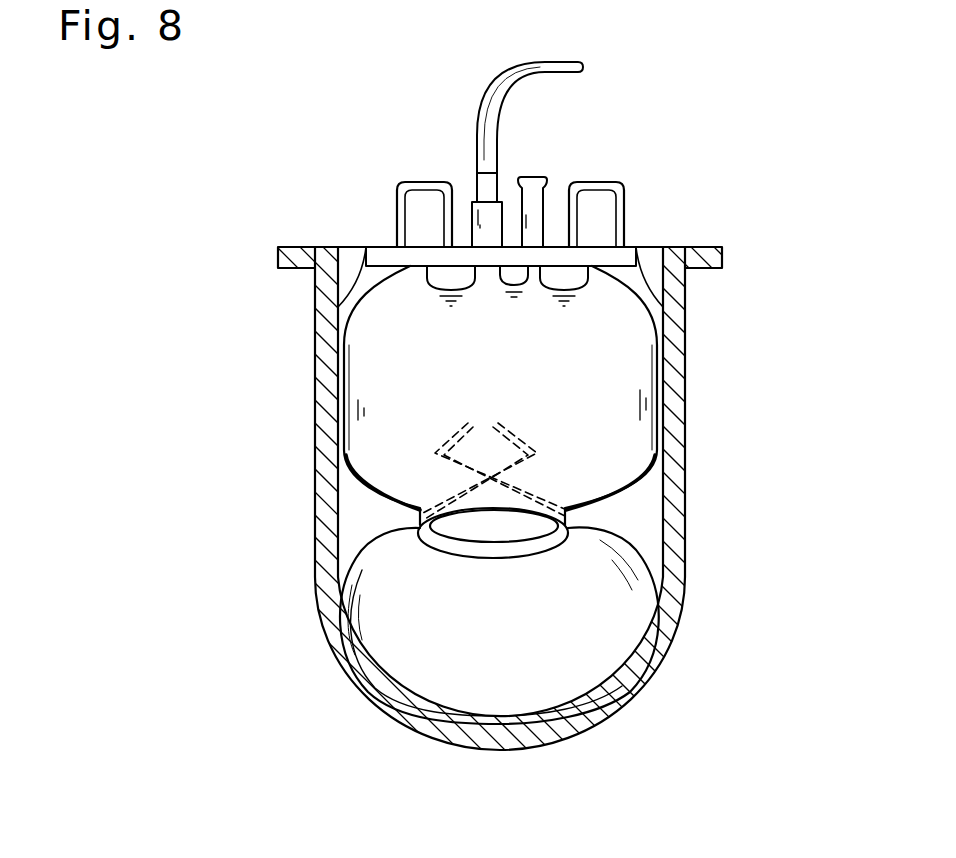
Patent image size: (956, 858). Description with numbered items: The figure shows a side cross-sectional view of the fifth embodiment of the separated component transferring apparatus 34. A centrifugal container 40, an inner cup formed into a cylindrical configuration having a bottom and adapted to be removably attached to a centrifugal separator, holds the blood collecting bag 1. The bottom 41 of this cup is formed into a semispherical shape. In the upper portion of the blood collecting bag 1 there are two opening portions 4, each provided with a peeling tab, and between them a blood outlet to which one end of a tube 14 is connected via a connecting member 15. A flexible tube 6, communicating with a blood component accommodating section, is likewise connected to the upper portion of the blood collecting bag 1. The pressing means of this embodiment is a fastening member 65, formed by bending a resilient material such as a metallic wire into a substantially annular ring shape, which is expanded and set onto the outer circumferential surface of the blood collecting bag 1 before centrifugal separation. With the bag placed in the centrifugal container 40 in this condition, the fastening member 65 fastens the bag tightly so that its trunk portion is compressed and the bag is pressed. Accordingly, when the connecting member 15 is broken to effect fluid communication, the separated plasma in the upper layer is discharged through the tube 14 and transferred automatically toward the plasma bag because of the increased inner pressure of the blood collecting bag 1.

The blood collecting bag 1 is at (413, 393).
The opening portions 4 is at (423, 207).
The flexible tube 6 is at (535, 198).
The tube 14 is at (515, 82).
The connecting member 15 is at (490, 193).
The separated component transferring apparatus 34 is at (744, 172).
The centrifugal container 40 is at (690, 440).
The bottom 41 is at (400, 708).
The fastening member 65 is at (535, 557).